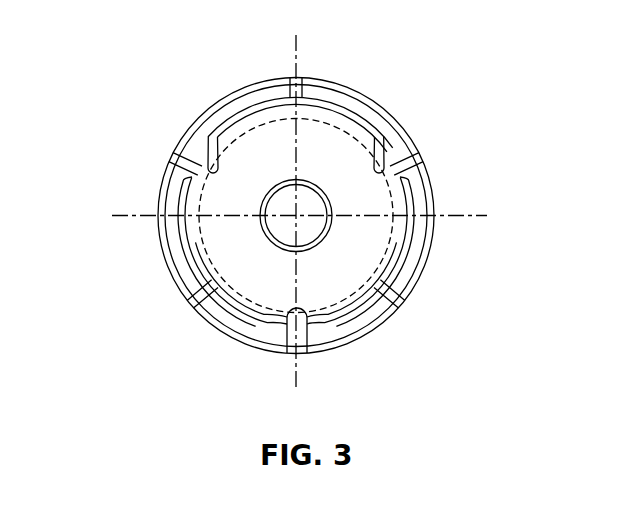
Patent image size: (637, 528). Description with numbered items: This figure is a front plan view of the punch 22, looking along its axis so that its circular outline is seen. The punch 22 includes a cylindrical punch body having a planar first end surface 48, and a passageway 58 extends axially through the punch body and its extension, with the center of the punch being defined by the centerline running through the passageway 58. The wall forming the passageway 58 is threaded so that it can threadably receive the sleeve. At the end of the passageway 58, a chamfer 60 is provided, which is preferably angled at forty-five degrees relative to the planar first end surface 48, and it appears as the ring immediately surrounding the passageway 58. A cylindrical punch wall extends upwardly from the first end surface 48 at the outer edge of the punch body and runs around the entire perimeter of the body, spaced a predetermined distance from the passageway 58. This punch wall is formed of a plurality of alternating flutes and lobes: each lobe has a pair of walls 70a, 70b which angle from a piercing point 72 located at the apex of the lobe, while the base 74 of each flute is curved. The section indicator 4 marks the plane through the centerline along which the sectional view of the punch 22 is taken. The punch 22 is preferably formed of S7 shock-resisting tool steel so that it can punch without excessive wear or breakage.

The section line 4- 4 is at (296, 42).
The punch 22 is at (146, 172).
The first end surface 48 is at (318, 138).
The passageway 58 is at (278, 198).
The chamfer 60 is at (305, 250).
The wall 70a is at (170, 234).
The wall 70b is at (218, 318).
The piercing point 72 is at (175, 292).
The base 74 is at (303, 340).